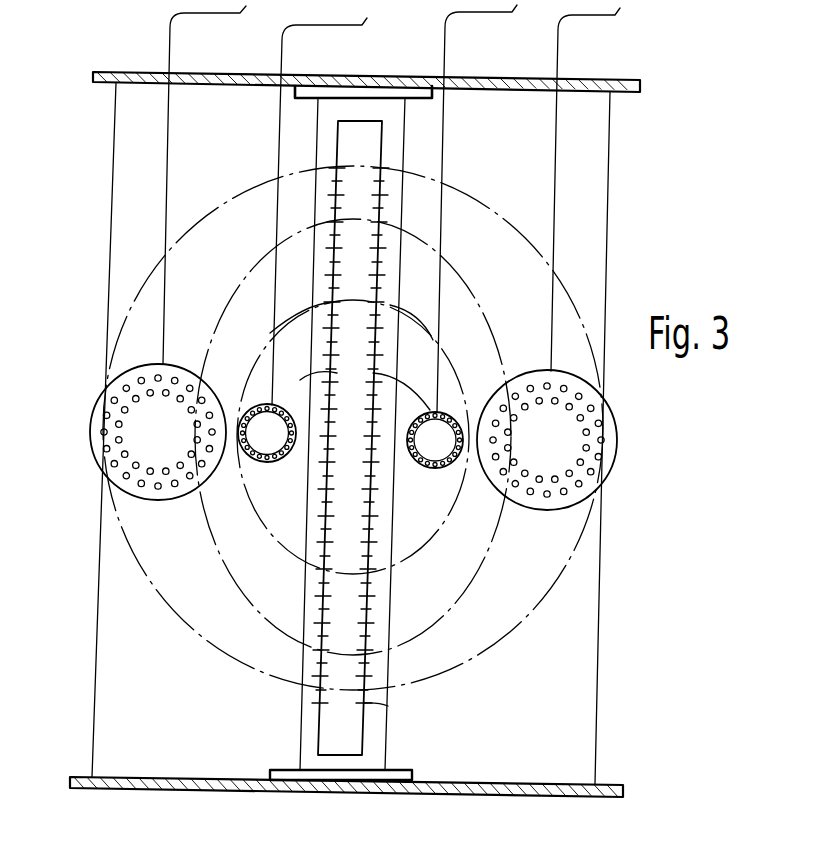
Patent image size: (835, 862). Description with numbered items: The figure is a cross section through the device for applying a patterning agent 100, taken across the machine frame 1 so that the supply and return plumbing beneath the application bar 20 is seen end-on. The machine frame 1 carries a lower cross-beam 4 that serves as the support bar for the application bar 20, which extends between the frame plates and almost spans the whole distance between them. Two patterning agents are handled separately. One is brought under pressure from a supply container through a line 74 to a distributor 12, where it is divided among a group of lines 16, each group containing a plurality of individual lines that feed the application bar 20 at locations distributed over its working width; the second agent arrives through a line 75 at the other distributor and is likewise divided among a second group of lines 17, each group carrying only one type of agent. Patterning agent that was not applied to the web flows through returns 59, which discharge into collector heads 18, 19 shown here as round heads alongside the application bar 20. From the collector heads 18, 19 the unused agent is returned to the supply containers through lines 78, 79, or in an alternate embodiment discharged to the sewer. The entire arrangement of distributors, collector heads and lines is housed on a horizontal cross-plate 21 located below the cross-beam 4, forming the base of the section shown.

The machine frame 1 is at (98, 789).
The cross-beam 4 is at (300, 722).
The distributor 12 is at (165, 500).
The group of lines 16 is at (124, 318).
The group of lines 17 is at (590, 325).
The collector head 18 is at (263, 463).
The collector head 19 is at (436, 469).
The application bar 20 is at (363, 722).
The horizontal cross-plate 21 is at (600, 644).
The returns 59 is at (296, 313).
The line 74 is at (170, 50).
The line 75 is at (558, 48).
The line 78 is at (282, 53).
The line 79 is at (445, 45).
The device for applying a patterning agent 100 is at (628, 188).